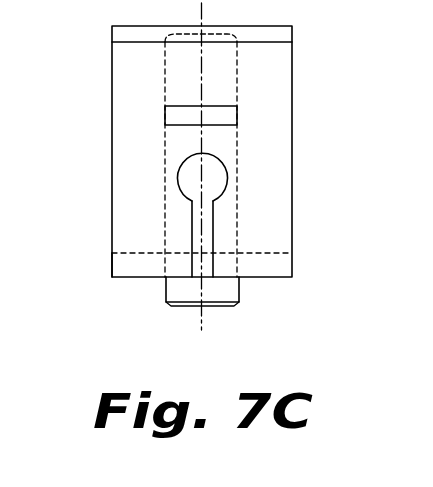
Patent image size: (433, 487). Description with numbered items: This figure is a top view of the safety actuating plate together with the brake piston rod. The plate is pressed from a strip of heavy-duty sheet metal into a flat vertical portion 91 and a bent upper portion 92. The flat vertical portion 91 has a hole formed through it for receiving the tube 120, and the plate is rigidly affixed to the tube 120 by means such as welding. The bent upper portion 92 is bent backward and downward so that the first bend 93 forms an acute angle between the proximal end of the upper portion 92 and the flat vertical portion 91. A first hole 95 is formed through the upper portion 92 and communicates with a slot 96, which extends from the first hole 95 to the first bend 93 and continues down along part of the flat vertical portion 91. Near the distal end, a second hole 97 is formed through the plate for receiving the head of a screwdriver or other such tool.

The flat vertical portion 91 is at (272, 283).
The bent upper portion 92 is at (295, 248).
The first bend 93 is at (112, 266).
The first hole 95 is at (178, 181).
The slot 96 is at (192, 267).
The second hole 97 is at (165, 113).
The tube 120 is at (239, 303).